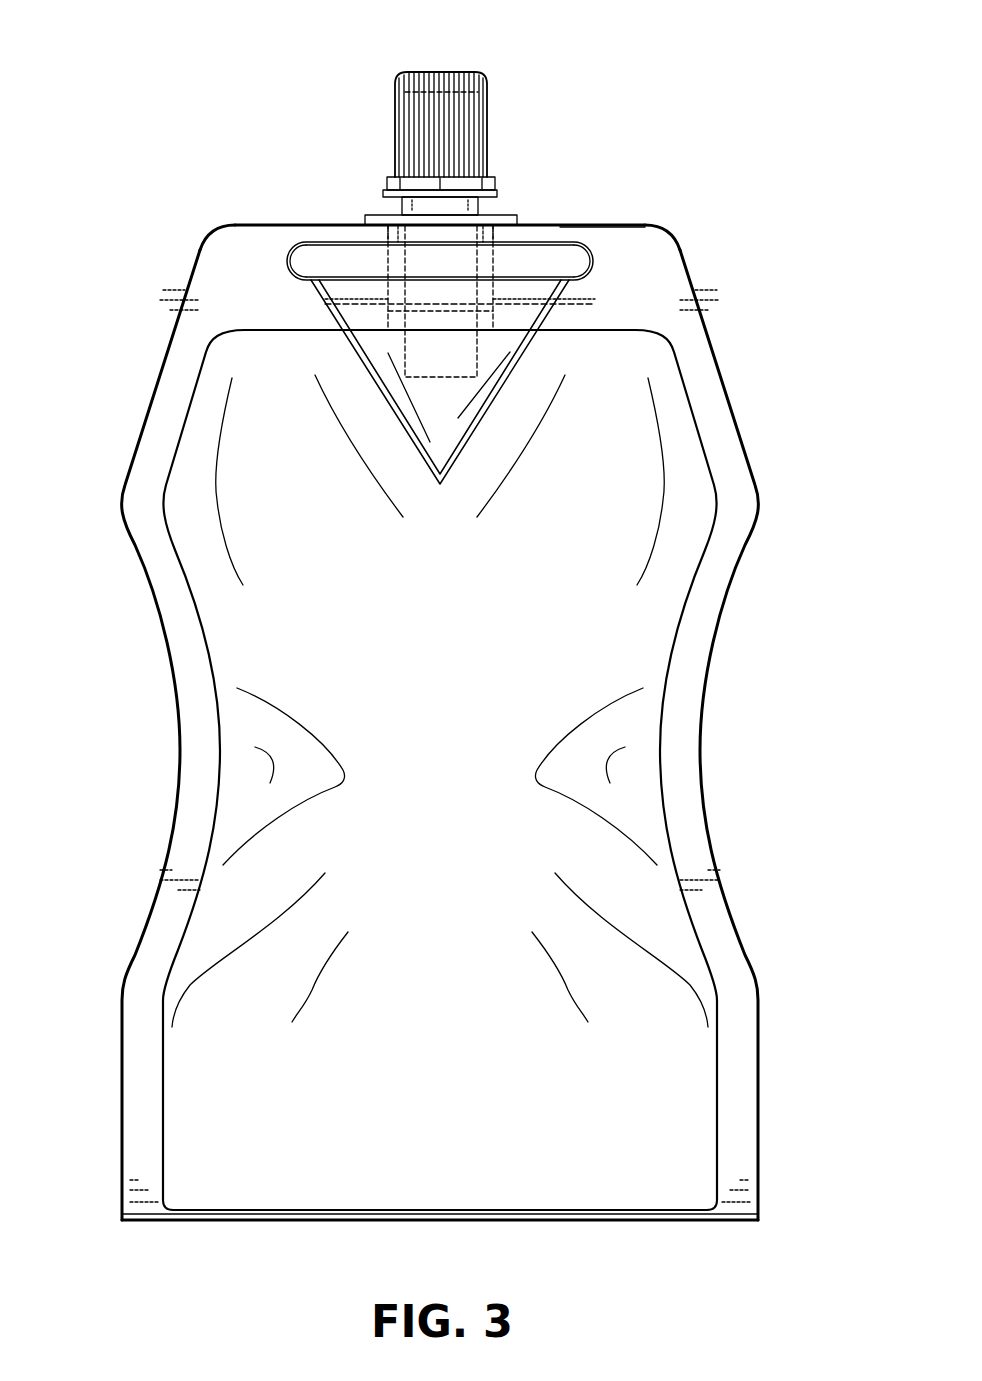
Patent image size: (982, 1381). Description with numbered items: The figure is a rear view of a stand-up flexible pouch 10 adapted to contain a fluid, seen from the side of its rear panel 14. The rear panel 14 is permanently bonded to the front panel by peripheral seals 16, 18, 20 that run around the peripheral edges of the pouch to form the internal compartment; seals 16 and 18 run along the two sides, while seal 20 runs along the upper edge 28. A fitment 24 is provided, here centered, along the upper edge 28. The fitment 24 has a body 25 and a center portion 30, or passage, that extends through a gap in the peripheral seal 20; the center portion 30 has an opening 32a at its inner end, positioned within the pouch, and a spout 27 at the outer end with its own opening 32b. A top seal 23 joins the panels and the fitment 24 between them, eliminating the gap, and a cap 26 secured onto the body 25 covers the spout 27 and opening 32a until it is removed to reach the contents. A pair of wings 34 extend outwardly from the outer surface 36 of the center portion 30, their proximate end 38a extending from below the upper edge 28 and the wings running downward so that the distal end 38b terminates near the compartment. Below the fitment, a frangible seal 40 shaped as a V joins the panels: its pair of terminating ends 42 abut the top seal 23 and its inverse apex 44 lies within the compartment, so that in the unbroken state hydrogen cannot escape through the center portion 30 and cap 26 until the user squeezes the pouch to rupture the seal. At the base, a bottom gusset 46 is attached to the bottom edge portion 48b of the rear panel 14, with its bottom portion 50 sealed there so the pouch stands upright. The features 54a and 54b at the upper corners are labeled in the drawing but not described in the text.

The flexible pouch 10 is at (450, 646).
The rear panel 14 is at (690, 450).
The peripheral seal 16 is at (678, 752).
The peripheral seal 18 is at (178, 773).
The peripheral seal 20 is at (650, 236).
The top seal 23 is at (556, 250).
The fitment 24 is at (264, 109).
The body 25 is at (495, 162).
The cap 26 is at (482, 70).
The spout 27 is at (395, 118).
The upper edge 28 is at (613, 224).
The center portion 30 is at (478, 348).
The opening 32a is at (445, 72).
The opening 32b is at (445, 380).
The pair of wings 34 is at (388, 298).
The outer surface 36 is at (492, 326).
The proximate end 38a is at (385, 216).
The distal end 38b is at (490, 330).
The frangible seal 40 is at (407, 459).
The terminating ends 42 is at (306, 276).
The inverse apex 44 is at (440, 484).
The bottom gusset 46 is at (117, 1232).
The bottom edge portion 48b is at (605, 1209).
The bottom portion 50 is at (648, 1222).
The top right corner 54a is at (676, 240).
The top left corner 54b is at (203, 245).